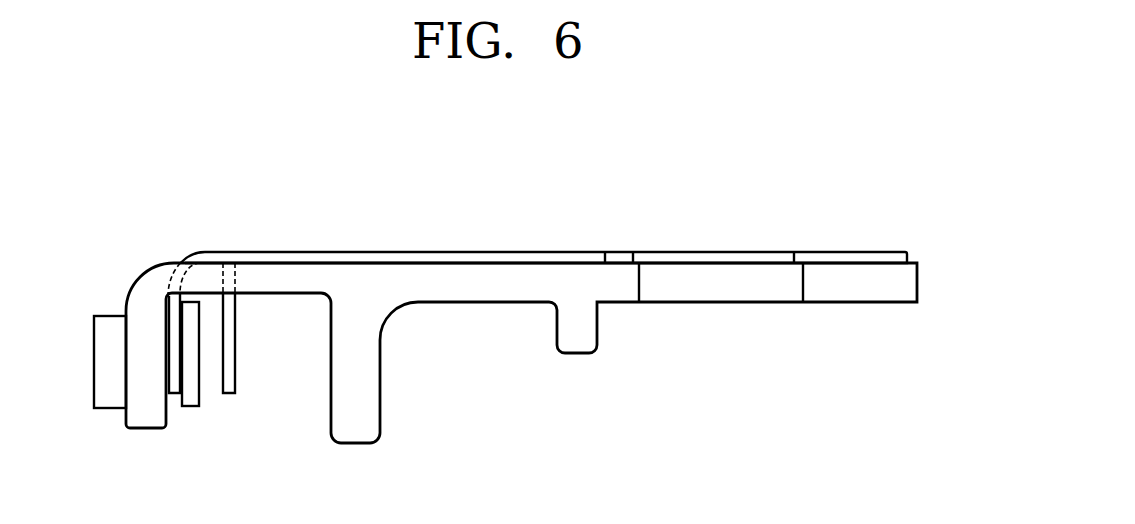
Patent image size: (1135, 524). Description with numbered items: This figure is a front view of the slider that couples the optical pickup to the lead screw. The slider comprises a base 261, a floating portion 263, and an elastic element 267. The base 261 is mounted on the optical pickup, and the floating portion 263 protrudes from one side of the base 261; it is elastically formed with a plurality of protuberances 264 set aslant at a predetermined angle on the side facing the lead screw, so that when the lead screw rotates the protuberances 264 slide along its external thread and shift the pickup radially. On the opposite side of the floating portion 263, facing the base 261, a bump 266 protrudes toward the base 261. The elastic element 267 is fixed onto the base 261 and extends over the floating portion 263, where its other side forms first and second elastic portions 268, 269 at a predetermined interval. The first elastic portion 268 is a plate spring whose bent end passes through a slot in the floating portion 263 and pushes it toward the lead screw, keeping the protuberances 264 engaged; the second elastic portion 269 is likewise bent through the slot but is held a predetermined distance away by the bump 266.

The base 261 is at (357, 273).
The floating portion 263 is at (138, 430).
The protuberances 264 is at (105, 315).
The bump 266 is at (195, 396).
The elastic element 267 is at (422, 255).
The first elastic portion 268 is at (175, 394).
The second elastic portion 269 is at (232, 381).